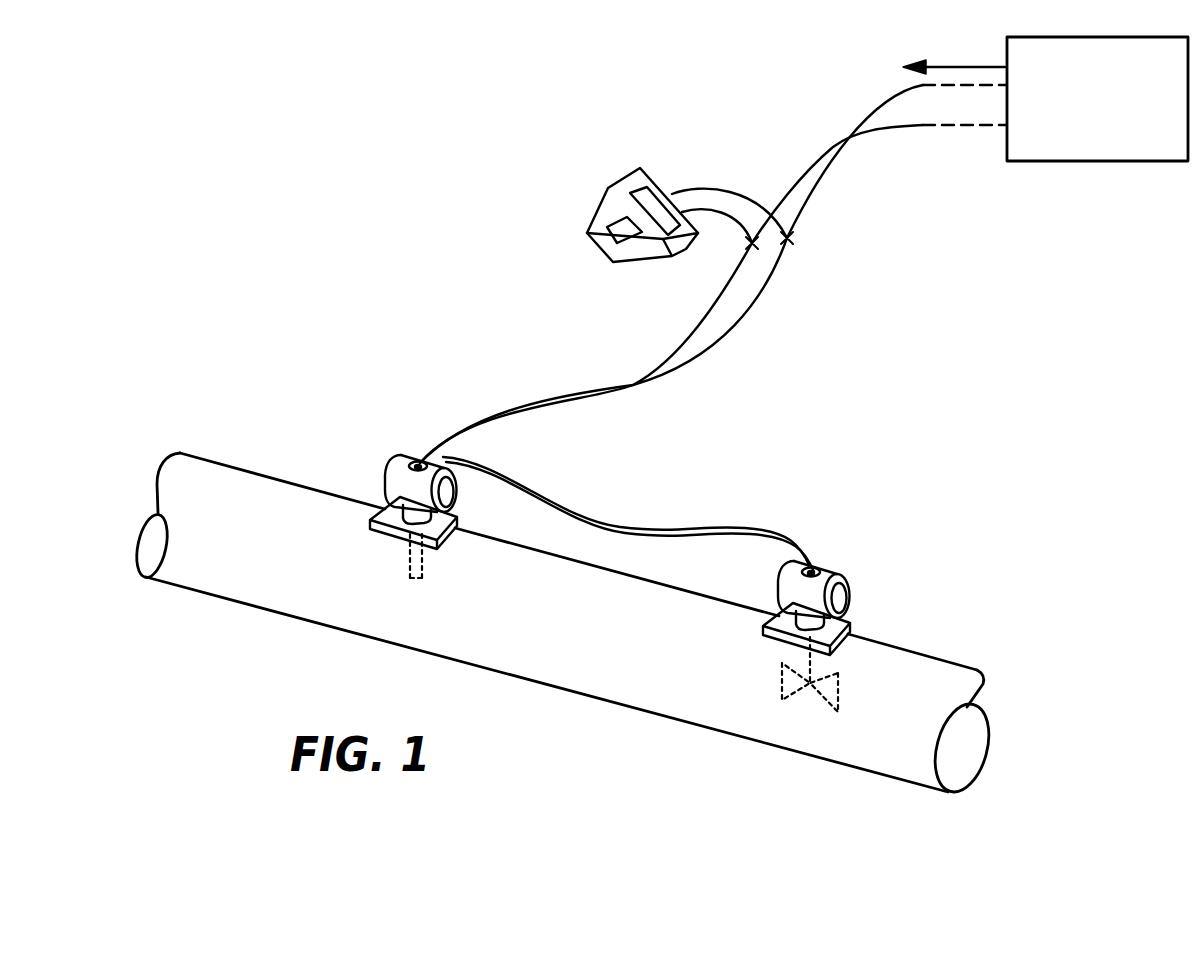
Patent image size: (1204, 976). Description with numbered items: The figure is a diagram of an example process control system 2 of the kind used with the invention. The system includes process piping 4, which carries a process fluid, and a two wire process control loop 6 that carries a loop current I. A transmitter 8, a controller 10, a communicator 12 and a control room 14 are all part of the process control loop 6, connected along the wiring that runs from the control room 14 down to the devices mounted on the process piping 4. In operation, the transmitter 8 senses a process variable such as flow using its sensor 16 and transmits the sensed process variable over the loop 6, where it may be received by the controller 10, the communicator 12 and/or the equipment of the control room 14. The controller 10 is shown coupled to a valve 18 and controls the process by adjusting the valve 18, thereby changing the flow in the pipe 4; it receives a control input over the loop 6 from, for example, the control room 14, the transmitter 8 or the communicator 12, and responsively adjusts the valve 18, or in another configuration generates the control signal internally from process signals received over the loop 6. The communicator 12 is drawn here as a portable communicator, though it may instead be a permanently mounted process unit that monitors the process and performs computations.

The process control system 2 is at (305, 309).
The process piping 4 is at (233, 575).
The two wire process control loop 6 is at (722, 297).
The transmitter 8 is at (480, 490).
The controller 10 is at (828, 567).
The communicator 12 is at (610, 186).
The control room 14 is at (1082, 162).
The sensor 16 is at (423, 567).
The valve 18 is at (838, 690).